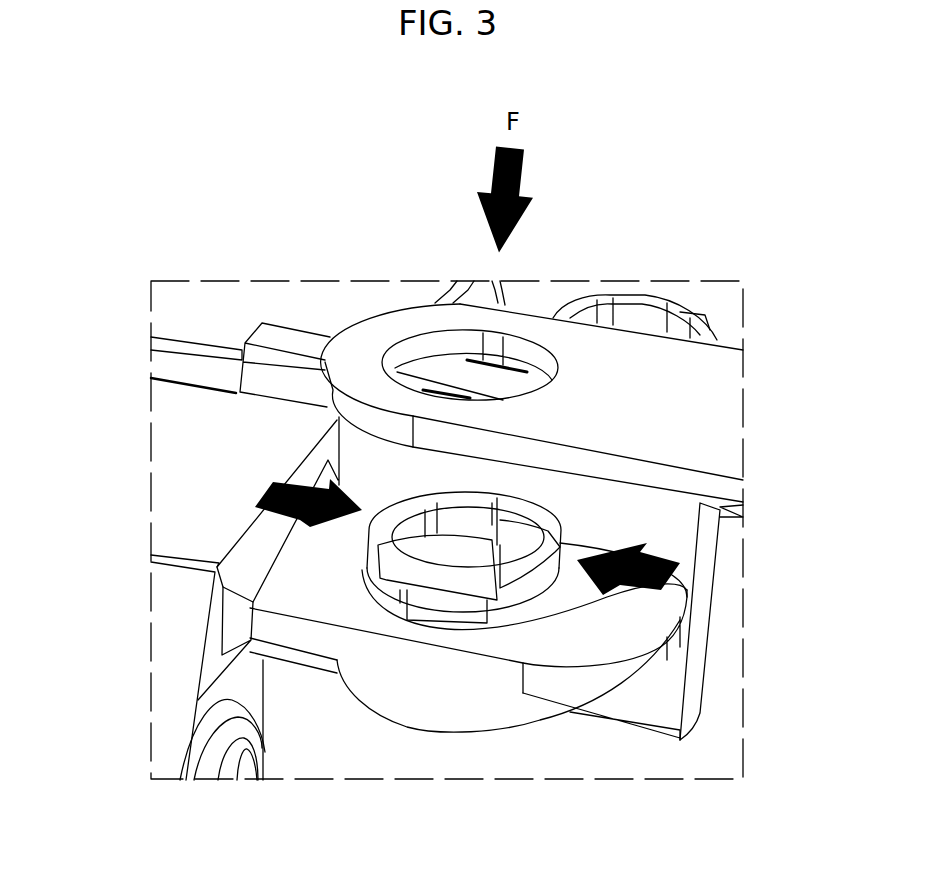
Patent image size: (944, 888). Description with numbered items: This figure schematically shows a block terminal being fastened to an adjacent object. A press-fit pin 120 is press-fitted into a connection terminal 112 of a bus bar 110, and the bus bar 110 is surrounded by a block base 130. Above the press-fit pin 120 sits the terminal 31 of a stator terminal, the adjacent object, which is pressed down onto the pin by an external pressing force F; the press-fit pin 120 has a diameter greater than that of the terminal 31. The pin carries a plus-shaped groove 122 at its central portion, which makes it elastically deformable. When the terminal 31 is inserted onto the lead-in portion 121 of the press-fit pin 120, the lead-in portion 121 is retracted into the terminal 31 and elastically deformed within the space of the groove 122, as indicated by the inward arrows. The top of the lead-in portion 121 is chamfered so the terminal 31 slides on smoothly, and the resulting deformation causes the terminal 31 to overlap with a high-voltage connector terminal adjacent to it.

The terminal of a stator terminal 31 is at (628, 405).
The bus bar 110 is at (285, 642).
The connection terminal 112 is at (407, 632).
The press-fit pin 120 is at (486, 716).
The lead-in portion 121 is at (450, 582).
The "+"-shaped groove 122 is at (480, 540).
The block base 130 is at (222, 441).